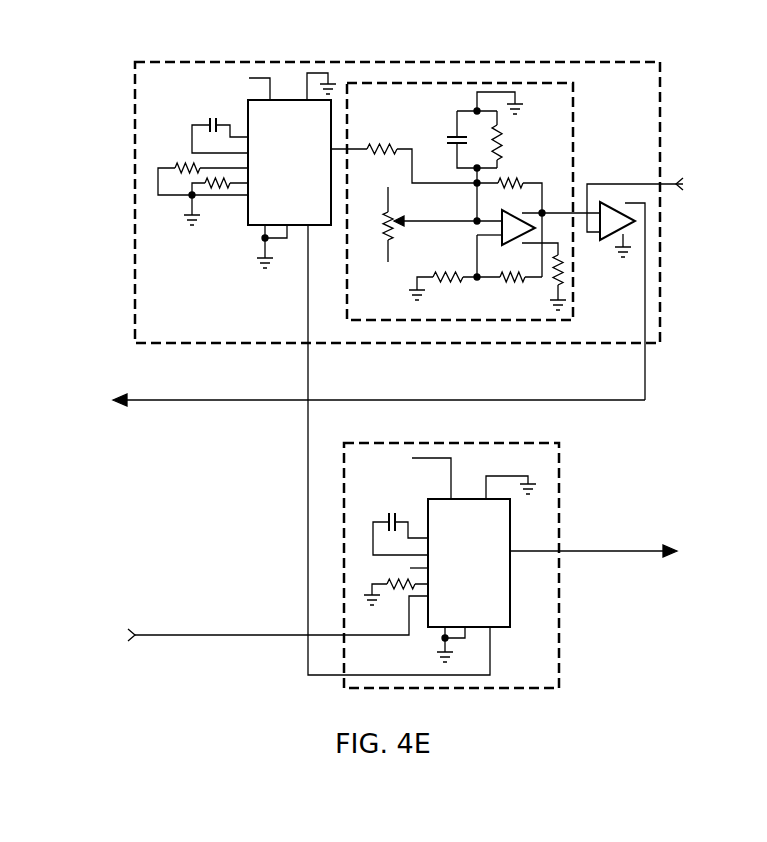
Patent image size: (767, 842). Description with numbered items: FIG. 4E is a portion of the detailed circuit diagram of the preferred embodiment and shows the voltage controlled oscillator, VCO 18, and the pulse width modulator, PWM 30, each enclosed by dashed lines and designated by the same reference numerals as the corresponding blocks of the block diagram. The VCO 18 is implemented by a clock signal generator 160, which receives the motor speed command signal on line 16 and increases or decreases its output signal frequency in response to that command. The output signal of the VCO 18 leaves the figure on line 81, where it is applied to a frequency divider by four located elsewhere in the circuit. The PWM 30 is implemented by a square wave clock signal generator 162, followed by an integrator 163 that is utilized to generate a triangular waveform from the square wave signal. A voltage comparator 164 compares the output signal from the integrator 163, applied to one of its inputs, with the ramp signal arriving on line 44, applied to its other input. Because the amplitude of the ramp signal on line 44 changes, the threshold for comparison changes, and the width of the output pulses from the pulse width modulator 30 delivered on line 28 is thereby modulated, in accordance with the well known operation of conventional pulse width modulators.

The line 16 is at (167, 633).
The VCO 18 is at (483, 452).
The line 28 is at (170, 400).
The PWM 30 is at (618, 68).
The line 44 is at (603, 185).
The line 81 is at (640, 550).
The clock signal generator 160 is at (497, 530).
The square wave clock signal generator 162 is at (288, 110).
The integrator 163 is at (413, 97).
The voltage comparator 164 is at (602, 237).